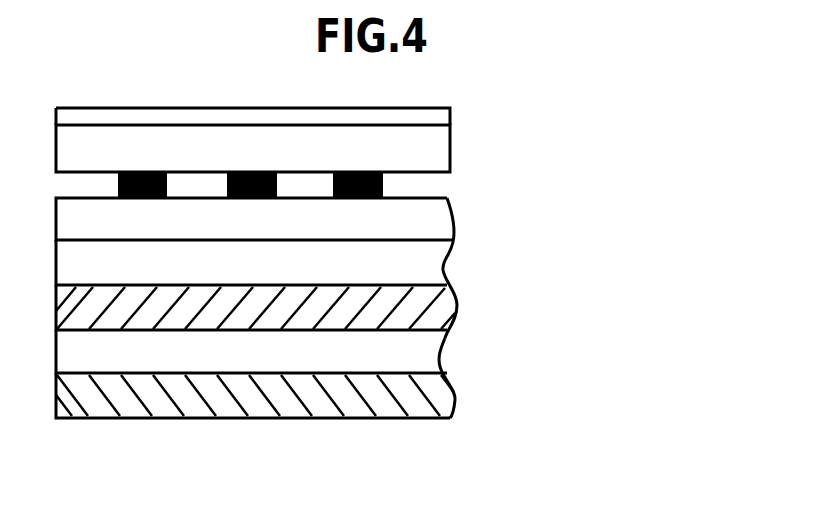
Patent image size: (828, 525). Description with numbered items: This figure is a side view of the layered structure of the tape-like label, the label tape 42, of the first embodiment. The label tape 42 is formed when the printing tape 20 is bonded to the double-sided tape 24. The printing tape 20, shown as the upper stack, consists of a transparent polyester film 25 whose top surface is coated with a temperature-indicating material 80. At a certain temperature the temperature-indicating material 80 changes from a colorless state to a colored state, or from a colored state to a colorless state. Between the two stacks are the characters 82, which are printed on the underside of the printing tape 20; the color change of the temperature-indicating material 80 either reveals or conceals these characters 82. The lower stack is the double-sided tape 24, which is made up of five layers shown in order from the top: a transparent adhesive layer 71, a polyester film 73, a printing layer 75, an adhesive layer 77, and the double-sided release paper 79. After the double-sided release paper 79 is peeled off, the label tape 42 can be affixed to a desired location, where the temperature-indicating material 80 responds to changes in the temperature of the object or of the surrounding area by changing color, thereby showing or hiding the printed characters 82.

The label tape 42 is at (379, 256).
The printing tape 20 is at (341, 131).
The temperature-indicating material 80 is at (443, 117).
The transparent polyester film 25 is at (425, 153).
The characters 82 is at (420, 188).
The double-sided tape 24 is at (340, 310).
The transparent adhesive layer 71 is at (438, 222).
The polyester film 73 is at (442, 268).
The printing layer 75 is at (443, 318).
The adhesive layer 77 is at (423, 357).
The double-sided release paper 79 is at (301, 395).